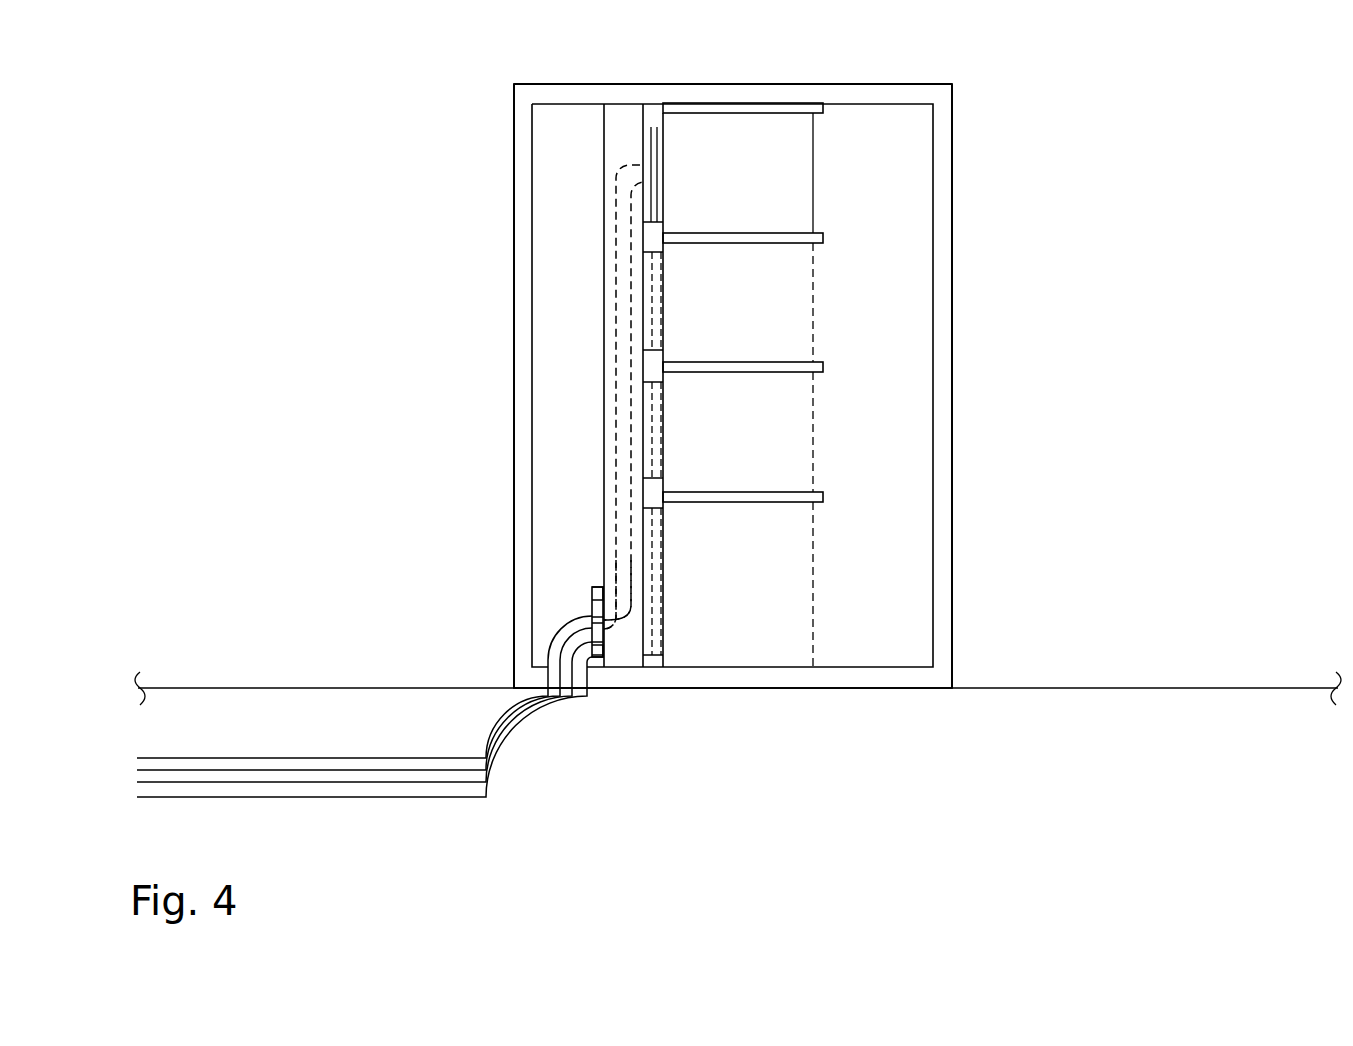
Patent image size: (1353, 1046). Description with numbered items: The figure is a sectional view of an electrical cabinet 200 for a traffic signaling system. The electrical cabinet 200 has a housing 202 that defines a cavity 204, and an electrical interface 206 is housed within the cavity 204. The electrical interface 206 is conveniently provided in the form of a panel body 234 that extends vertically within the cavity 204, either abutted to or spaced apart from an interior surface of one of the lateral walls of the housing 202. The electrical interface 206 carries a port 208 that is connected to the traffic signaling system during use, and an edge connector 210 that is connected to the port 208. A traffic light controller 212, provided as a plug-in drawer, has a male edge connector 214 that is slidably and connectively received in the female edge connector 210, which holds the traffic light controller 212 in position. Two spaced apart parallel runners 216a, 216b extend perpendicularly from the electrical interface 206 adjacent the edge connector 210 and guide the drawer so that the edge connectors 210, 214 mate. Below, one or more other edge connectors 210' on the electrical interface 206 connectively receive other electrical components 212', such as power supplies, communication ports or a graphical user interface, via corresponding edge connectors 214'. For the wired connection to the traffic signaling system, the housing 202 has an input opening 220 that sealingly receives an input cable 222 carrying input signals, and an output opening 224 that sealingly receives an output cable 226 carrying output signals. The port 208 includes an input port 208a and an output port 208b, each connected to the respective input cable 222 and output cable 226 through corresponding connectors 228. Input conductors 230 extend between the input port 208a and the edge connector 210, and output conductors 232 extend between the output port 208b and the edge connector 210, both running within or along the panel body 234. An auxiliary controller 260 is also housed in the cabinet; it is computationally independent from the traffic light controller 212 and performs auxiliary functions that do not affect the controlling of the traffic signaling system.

The electrical cabinet 200 is at (445, 78).
The housing 202 is at (514, 240).
The cavity 204 is at (565, 116).
The electrical interface 206 is at (604, 352).
The port 208 is at (560, 577).
The input port 208a is at (592, 596).
The output port 208b is at (602, 660).
The edge connector 210 is at (635, 348).
The other edge connector 210' is at (683, 729).
The traffic light controller 212 is at (729, 178).
The other electrical component 212' is at (735, 366).
The male edge connector 214 is at (680, 126).
The corresponding edge connector 214' is at (722, 710).
The runner 216a is at (826, 108).
The runner 216b is at (826, 240).
The input opening 220 is at (556, 705).
The input cable 222 is at (302, 755).
The output opening 224 is at (578, 690).
The output cable 226 is at (300, 800).
The connector 228 is at (590, 622).
The input conductors 230 is at (607, 524).
The output conductors 232 is at (633, 549).
The panel body 234 is at (612, 428).
The auxiliary controller 260 is at (751, 598).